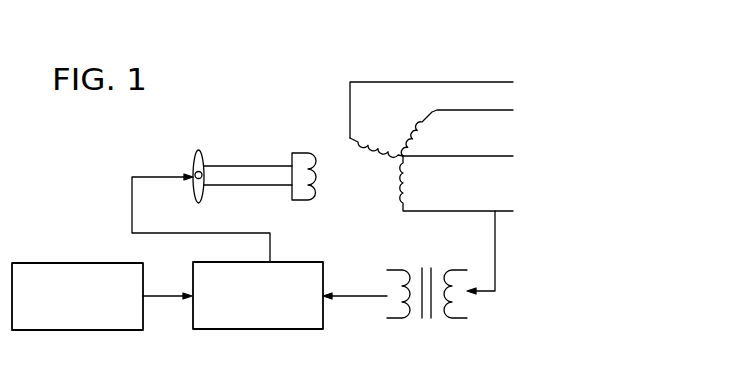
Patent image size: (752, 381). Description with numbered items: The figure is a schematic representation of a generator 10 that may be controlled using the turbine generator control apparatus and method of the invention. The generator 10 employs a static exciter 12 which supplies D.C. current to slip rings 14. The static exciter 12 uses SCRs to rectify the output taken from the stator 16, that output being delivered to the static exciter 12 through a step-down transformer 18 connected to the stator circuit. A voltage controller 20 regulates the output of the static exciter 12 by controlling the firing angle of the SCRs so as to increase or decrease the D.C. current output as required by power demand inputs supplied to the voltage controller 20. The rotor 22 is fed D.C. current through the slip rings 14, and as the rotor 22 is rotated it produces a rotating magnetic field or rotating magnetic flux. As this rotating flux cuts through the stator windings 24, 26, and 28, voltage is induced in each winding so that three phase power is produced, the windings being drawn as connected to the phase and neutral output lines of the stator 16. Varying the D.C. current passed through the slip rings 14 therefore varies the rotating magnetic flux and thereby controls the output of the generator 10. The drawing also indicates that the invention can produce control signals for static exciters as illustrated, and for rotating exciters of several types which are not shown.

The generator 10 is at (554, 292).
The static exciter 12 is at (259, 329).
The slip rings 14 is at (197, 205).
The stator 16 is at (475, 117).
The step-down transformer 18 is at (469, 308).
The voltage controller 20 is at (90, 330).
The rotor 22 is at (302, 200).
The stator winding 24 is at (382, 142).
The stator winding 26 is at (418, 133).
The stator winding 28 is at (407, 188).